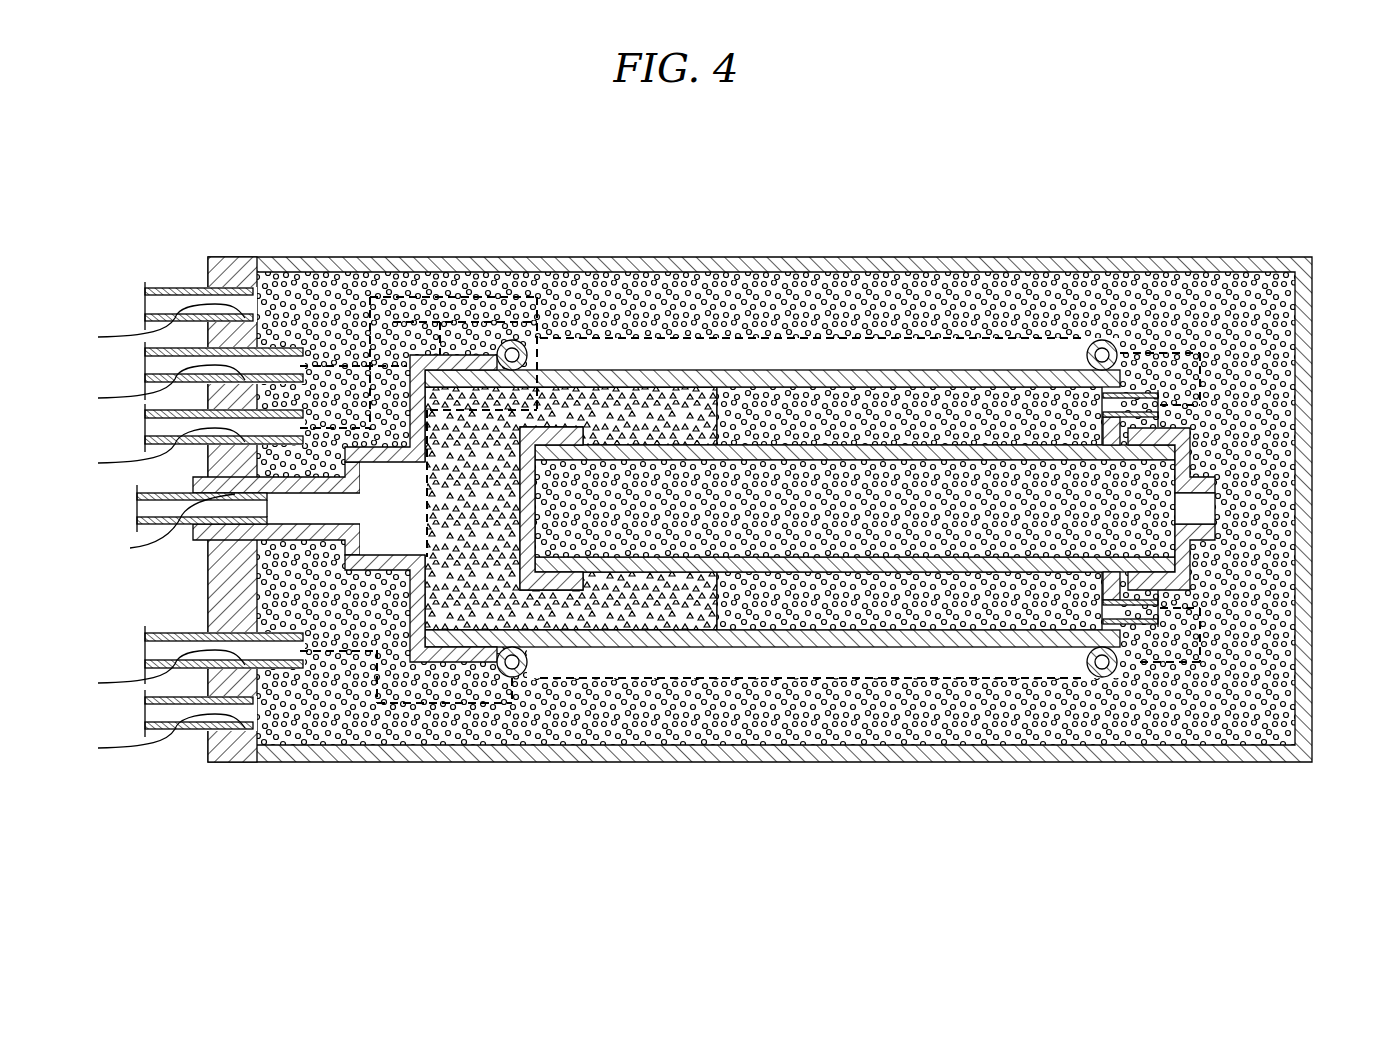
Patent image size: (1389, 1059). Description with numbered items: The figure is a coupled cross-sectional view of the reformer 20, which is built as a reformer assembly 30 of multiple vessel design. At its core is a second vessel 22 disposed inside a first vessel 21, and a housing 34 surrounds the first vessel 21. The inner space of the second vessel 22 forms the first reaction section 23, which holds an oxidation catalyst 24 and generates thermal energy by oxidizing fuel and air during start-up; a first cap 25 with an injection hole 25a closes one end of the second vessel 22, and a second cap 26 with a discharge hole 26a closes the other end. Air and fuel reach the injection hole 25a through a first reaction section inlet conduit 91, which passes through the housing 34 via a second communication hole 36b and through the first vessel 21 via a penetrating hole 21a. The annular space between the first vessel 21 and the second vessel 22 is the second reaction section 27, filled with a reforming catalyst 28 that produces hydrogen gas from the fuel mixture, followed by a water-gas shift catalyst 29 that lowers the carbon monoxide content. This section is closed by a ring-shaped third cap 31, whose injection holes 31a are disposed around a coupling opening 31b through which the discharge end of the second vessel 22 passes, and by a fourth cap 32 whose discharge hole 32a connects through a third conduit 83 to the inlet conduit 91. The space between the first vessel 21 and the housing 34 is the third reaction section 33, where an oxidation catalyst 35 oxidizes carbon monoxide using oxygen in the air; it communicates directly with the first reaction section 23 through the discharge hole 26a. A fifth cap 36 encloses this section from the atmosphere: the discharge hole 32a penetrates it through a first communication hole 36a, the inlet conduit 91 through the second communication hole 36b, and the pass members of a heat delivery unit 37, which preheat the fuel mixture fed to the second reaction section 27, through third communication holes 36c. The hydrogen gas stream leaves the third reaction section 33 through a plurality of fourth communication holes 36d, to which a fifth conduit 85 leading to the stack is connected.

The reformer 20 is at (516, 142).
The first vessel 21 is at (727, 637).
The penetrating hole 21a is at (578, 394).
The second vessel 22 is at (900, 565).
The first reaction section 23 is at (963, 822).
The oxidation catalyst 24 is at (955, 548).
The first cap 25 is at (560, 548).
The injection hole 25a is at (497, 548).
The second cap 26 is at (1195, 590).
The discharge hole 26a is at (1197, 542).
The second reaction section 27 is at (683, 828).
The reforming catalyst 28 is at (775, 585).
The water-gas shift catalyst 29 is at (677, 615).
The reformer assembly 30 is at (993, 233).
The third cap 31 is at (1135, 350).
The injection hole 31a is at (1117, 405).
The coupling opening 31b is at (1072, 578).
The fourth cap 32 is at (428, 352).
The discharge hole 32a is at (323, 560).
The third reaction section 33 is at (815, 204).
The housing 34 is at (870, 268).
The oxidation catalyst 35 is at (828, 276).
The fifth cap 36 is at (207, 262).
The first communication hole 36a is at (139, 512).
The second communication hole 36b is at (147, 428).
The third communication hole 36c is at (147, 366).
The fourth communication hole 36d is at (147, 305).
The heat delivery unit 37 is at (520, 338).
The third conduit 83 is at (150, 525).
The fifth conduit 85 is at (155, 532).
The first reaction section inlet conduit 91 is at (418, 793).